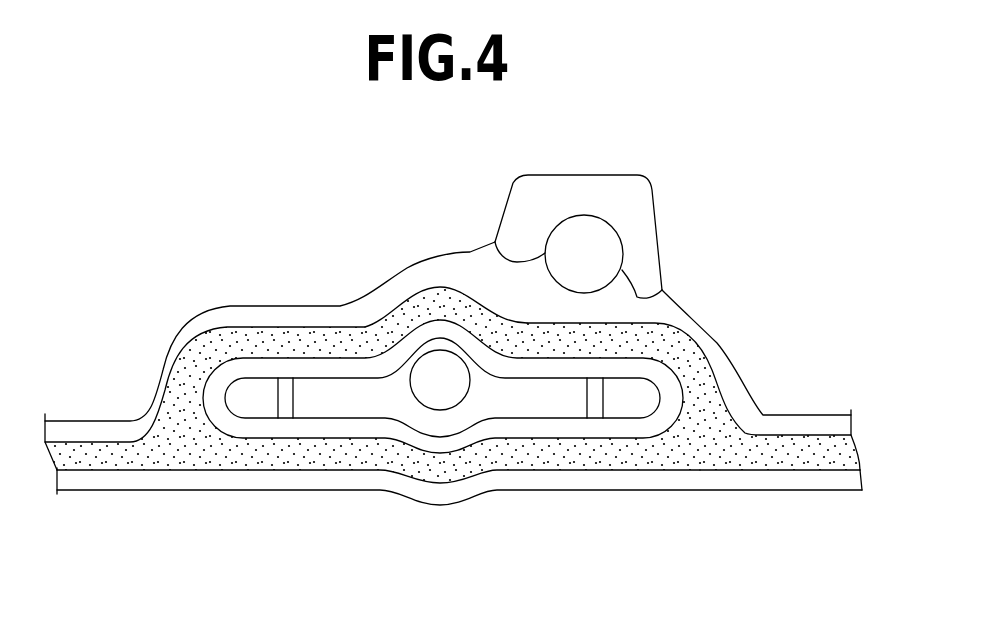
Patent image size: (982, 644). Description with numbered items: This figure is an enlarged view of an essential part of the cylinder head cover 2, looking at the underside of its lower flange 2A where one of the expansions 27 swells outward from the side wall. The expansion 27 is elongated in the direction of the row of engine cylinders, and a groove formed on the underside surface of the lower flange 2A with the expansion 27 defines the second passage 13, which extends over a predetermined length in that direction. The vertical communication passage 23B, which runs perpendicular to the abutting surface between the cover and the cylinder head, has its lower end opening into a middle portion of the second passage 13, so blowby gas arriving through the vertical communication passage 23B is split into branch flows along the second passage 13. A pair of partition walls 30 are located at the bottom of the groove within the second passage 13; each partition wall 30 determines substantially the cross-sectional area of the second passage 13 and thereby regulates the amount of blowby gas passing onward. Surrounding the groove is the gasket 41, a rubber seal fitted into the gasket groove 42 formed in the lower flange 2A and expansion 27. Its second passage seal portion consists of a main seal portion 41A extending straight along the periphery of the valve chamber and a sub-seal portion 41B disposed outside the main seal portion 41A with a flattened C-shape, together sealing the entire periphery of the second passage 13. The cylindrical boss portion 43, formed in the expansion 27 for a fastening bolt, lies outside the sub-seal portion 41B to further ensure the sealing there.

The cylinder head cover 2 is at (473, 424).
The lower flange 2A is at (823, 478).
The second passage 13 is at (352, 407).
The vertical communication passage 23B is at (452, 395).
The expansion 27 is at (172, 341).
The partition wall 30 is at (285, 408).
The gasket 41 is at (777, 440).
The main seal portion 41A is at (550, 460).
The sub-seal portion 41B is at (288, 335).
The gasket groove 42 is at (773, 460).
The boss portion 43 is at (645, 193).